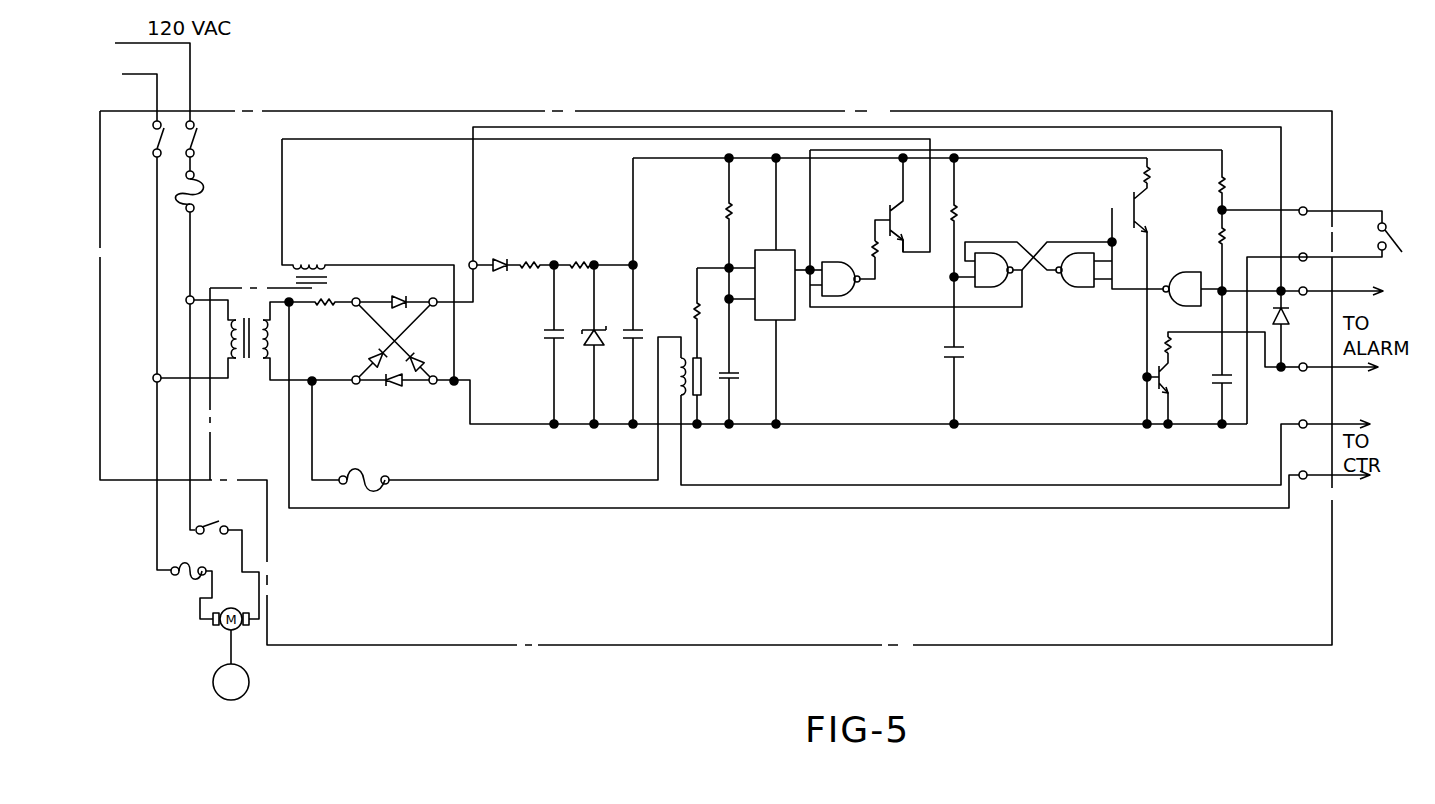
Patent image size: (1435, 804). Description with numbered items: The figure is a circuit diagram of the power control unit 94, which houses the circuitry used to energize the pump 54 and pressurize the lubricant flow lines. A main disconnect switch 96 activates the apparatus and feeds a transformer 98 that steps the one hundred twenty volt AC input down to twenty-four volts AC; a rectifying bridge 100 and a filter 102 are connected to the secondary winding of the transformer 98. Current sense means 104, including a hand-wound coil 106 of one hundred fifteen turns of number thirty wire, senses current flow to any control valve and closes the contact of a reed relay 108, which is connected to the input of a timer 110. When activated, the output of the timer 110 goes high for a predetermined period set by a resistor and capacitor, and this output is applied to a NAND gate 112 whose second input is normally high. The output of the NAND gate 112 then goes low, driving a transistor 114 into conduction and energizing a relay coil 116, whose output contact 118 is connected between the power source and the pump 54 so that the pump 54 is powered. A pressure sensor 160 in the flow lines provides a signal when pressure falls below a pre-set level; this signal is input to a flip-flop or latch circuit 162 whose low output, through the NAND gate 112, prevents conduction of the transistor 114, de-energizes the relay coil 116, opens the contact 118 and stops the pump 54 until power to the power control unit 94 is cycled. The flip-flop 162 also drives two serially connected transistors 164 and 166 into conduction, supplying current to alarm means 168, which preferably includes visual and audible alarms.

The pump 54 is at (250, 686).
The power control unit 94 is at (590, 652).
The main disconnect switch 96 is at (200, 148).
The transformer 98 is at (246, 368).
The rectifying bridge 100 is at (387, 375).
The filter 102 is at (568, 300).
The current sense means 104 is at (712, 410).
The hand-wound coil 106 is at (680, 383).
The reed relay 108 is at (695, 356).
The timer 110 is at (787, 313).
The NAND gate 112 is at (855, 245).
The transistor 114 is at (881, 215).
The relay coil 116 is at (330, 232).
The output contact 118 is at (241, 500).
The pressure sensor 160 is at (1415, 197).
The flip-flop or latch circuit 162 is at (1037, 273).
The transistor 164 is at (1197, 207).
The transistor 166 is at (1208, 372).
The alarm means 168 is at (1427, 298).